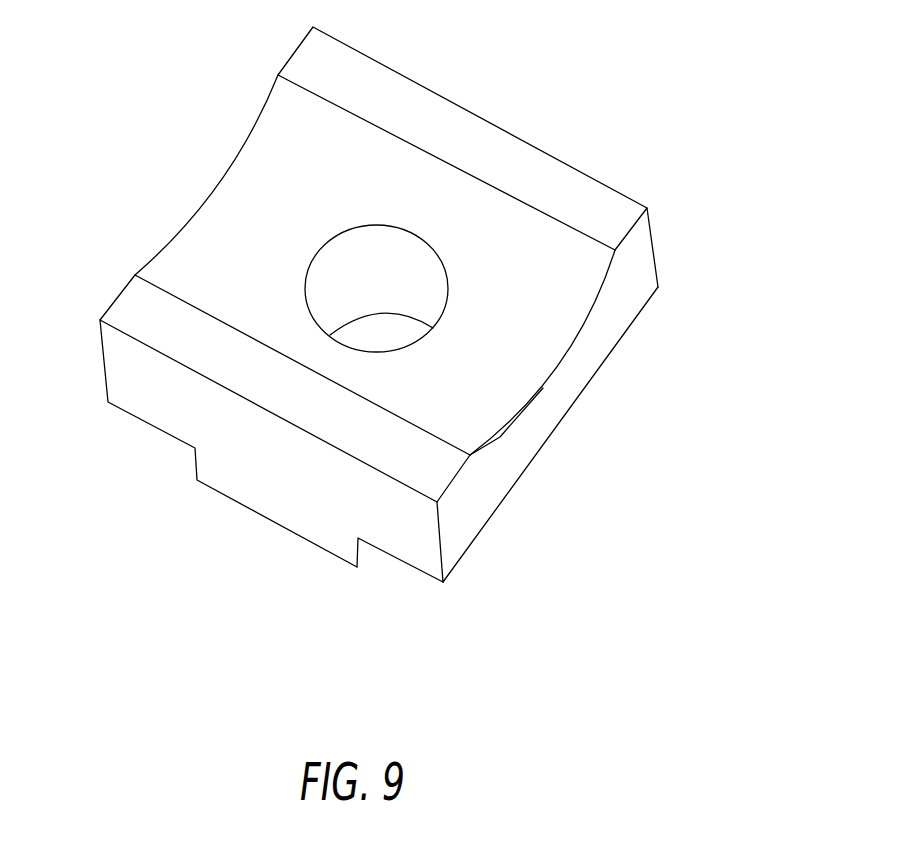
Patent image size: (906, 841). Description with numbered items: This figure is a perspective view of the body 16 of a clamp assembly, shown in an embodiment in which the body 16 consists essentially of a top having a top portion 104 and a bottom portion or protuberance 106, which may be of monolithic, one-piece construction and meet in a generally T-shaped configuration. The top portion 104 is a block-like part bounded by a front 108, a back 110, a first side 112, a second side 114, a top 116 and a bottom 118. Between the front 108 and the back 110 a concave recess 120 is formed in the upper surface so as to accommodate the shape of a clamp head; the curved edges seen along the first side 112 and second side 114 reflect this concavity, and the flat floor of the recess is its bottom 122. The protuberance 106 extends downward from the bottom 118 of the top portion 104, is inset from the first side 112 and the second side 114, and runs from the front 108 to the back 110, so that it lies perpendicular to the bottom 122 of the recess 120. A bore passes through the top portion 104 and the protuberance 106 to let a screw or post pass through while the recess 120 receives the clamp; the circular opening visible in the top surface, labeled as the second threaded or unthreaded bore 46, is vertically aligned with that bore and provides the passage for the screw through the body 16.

The body 16 is at (612, 75).
The second threaded or unthreaded bore 46 is at (392, 345).
The top portion 104 is at (528, 337).
The protuberance 106 is at (283, 503).
The front 108 is at (412, 525).
The back 110 is at (652, 237).
The first side 112 is at (575, 375).
The second side 114 is at (208, 200).
The top 116 is at (453, 125).
The bottom 118 is at (400, 562).
The recess 120 is at (185, 267).
The bottom of the recess 122 is at (545, 387).